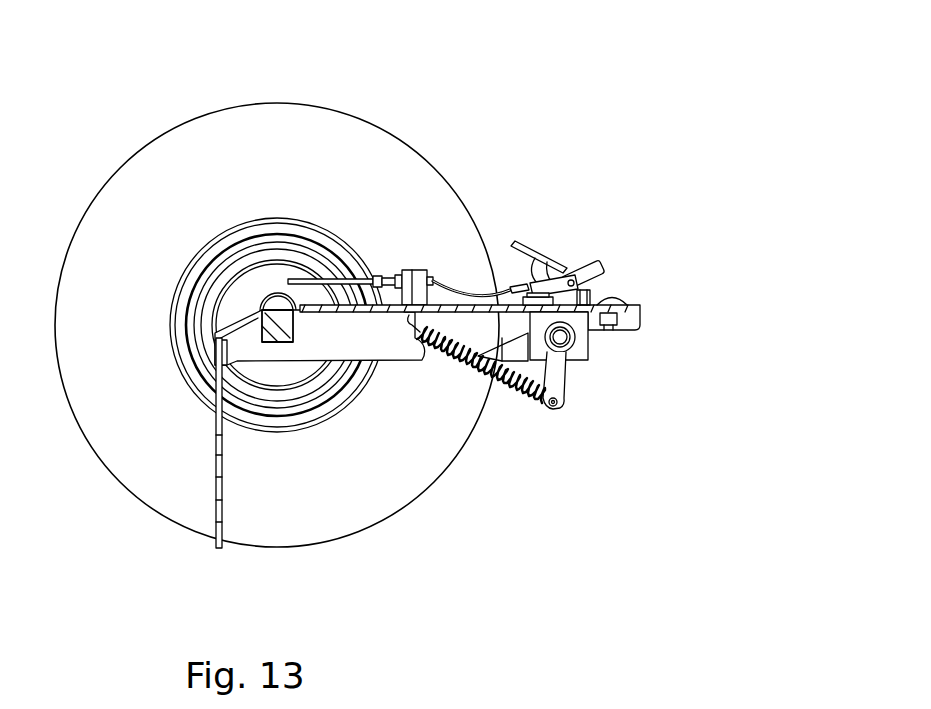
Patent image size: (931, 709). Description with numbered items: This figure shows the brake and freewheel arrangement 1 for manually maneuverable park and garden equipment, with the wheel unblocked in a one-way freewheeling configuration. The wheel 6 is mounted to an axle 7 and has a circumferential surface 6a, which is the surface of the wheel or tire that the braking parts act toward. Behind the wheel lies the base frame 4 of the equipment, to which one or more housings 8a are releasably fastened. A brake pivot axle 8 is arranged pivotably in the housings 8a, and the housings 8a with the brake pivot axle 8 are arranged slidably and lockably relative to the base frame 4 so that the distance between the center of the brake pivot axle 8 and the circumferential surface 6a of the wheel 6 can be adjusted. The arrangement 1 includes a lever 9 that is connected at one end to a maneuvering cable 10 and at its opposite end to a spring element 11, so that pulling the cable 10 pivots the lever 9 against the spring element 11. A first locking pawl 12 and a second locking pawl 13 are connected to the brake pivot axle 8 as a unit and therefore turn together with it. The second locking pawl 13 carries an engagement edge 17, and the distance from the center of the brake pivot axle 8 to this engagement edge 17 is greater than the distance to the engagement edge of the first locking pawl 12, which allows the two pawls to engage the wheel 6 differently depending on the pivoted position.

The brake and freewheel arrangement 1 is at (638, 255).
The base frame 4 is at (308, 348).
The wheel 6 is at (307, 247).
The circumferential surface 6a is at (430, 487).
The axle 7 is at (270, 320).
The brake pivot axle 8 is at (588, 337).
The housing 8a is at (588, 350).
The lever 9 is at (563, 383).
The maneuvering cable 10 is at (447, 282).
The spring element 11 is at (481, 370).
The first locking pawl 12 is at (540, 405).
The second locking pawl 13 is at (530, 245).
The engagement edge 17 is at (513, 243).